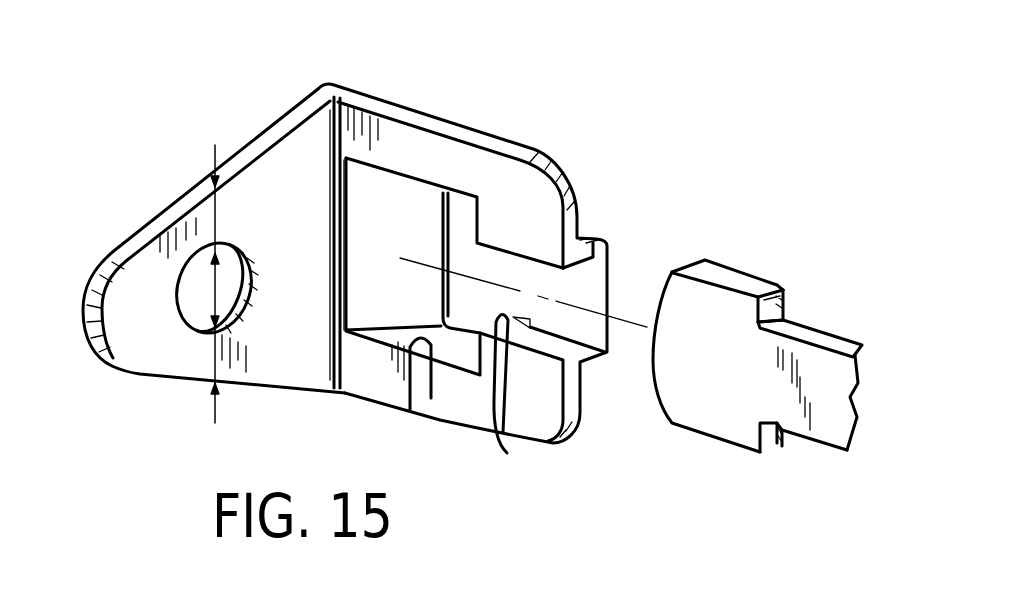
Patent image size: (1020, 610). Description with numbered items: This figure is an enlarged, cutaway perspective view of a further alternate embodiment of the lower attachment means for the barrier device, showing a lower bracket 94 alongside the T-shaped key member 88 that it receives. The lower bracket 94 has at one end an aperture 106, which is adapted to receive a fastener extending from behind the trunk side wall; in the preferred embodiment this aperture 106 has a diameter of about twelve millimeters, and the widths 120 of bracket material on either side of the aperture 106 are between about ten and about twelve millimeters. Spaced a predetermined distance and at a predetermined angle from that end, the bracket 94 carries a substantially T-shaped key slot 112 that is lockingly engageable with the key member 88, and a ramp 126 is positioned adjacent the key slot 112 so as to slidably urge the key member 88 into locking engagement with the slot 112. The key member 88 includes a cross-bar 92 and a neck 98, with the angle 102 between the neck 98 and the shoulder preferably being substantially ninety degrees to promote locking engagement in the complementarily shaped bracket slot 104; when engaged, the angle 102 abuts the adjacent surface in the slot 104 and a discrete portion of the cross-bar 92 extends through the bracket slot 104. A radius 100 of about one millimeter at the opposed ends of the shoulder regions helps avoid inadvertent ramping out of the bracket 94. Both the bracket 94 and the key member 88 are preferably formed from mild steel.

The lower bracket 94 is at (410, 110).
The ramp 126 is at (367, 202).
The aperture 106 is at (191, 267).
The widths 120 is at (217, 207).
The T-shaped key slot 112 is at (431, 398).
The bracket slot 104 is at (510, 452).
The cross-bar 92 is at (703, 310).
The radius 100 is at (783, 291).
The T-shaped key member 88 is at (797, 322).
The angle 102 is at (768, 320).
The neck 98 is at (830, 432).